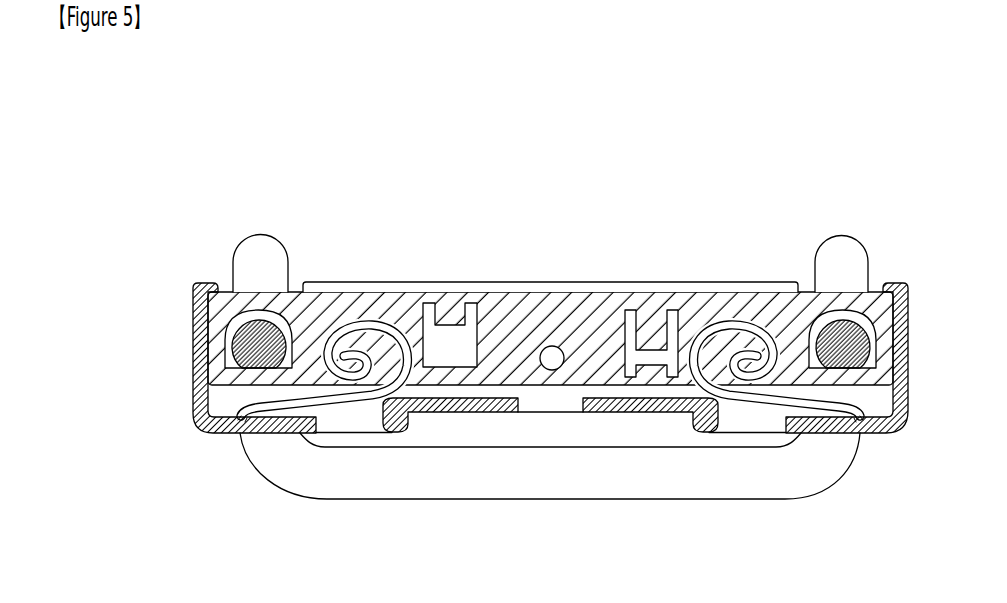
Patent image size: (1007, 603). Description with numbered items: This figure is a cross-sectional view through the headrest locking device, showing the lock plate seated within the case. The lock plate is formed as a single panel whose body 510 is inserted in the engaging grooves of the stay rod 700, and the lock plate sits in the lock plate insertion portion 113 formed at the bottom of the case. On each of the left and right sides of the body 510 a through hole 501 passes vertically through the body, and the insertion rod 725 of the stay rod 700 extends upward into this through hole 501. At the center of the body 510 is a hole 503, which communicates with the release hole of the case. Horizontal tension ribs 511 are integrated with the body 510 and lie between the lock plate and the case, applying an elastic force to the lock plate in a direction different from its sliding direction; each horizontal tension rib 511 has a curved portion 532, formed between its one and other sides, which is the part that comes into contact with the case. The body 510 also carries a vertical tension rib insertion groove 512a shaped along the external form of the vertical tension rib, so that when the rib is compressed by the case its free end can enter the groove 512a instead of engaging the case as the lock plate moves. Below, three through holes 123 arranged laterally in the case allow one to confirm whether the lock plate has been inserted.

The stay rod 700 is at (263, 210).
The insertion rod 725 is at (250, 338).
The vertical tension rib insertion groove 512a is at (454, 343).
The hole 503 is at (552, 356).
The body 510 is at (732, 307).
The through hole 501 is at (855, 318).
The lock plate insertion portion 113 is at (176, 440).
The curved portion 532 is at (264, 444).
The horizontal tension rib 511 is at (341, 428).
The through hole 123 is at (357, 427).